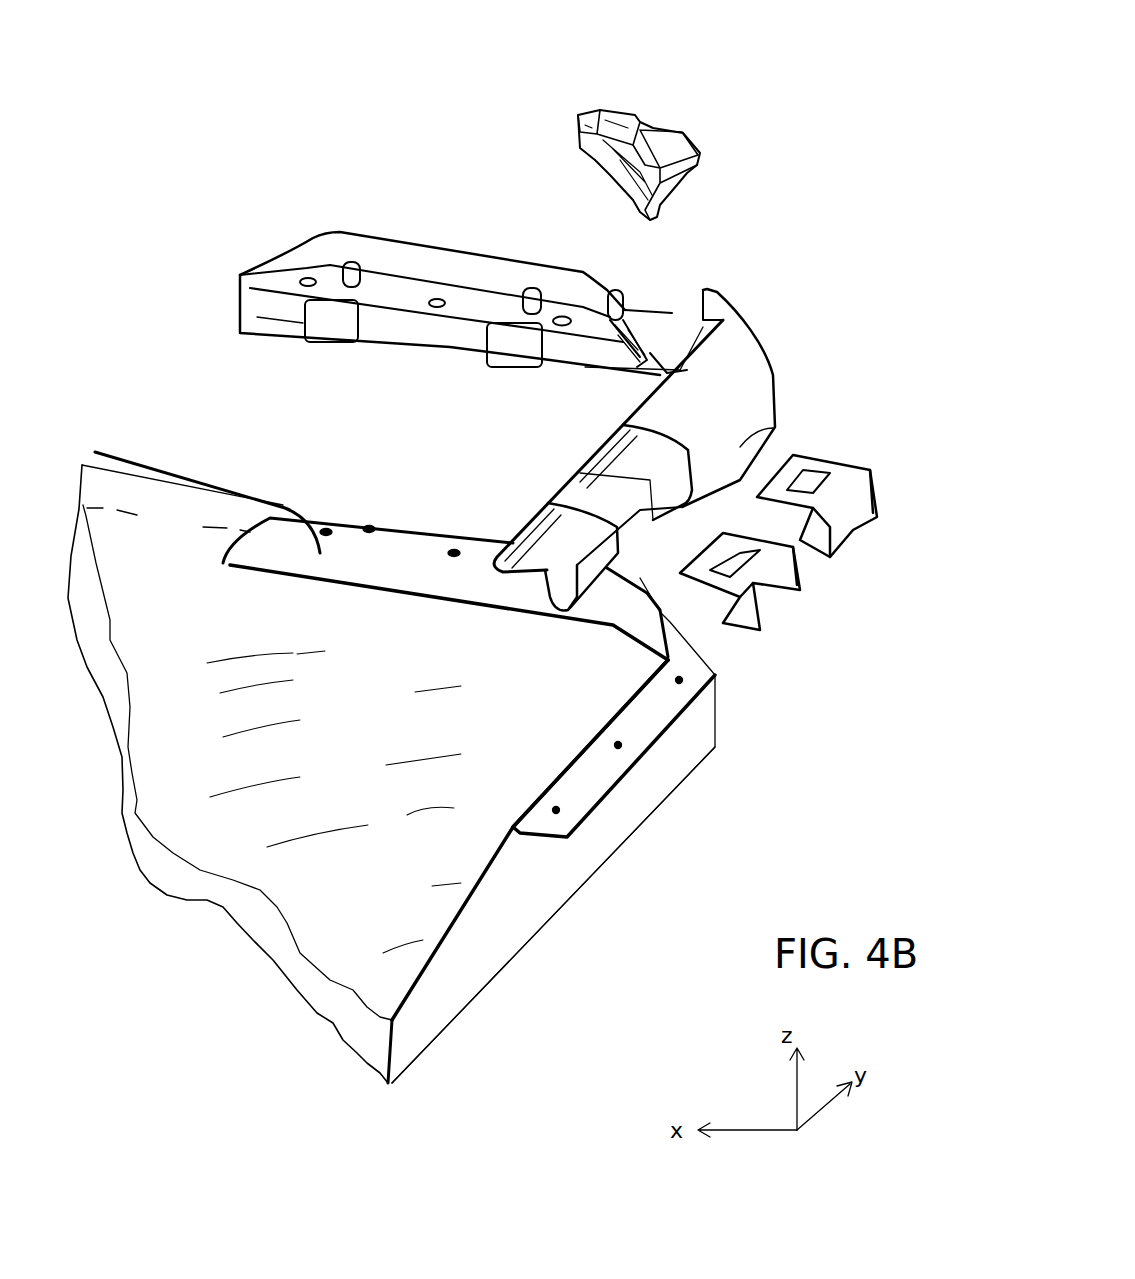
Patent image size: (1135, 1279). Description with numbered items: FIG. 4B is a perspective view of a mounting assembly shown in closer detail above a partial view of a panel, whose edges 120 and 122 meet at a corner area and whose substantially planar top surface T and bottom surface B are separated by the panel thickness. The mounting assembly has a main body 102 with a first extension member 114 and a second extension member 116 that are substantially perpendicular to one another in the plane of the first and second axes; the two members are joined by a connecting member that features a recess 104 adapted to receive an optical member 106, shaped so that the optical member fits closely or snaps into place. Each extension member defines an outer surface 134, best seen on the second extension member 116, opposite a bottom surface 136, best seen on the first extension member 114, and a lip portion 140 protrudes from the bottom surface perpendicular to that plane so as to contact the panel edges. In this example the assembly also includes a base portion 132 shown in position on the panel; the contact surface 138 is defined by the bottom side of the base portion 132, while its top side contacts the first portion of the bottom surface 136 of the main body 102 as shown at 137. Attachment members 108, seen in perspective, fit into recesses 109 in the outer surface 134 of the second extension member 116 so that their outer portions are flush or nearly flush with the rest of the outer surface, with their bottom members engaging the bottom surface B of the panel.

The main body 102 is at (757, 392).
The recess 104 is at (676, 312).
The optical member 106 is at (648, 140).
The attachment members 108 is at (857, 528).
The recesses 109 is at (655, 462).
The first extension member 114 is at (362, 232).
The second extension member 116 is at (779, 420).
The edge 120 is at (178, 513).
The edge 122 is at (577, 875).
The base portion 132 is at (197, 486).
The outer surface 134 is at (593, 473).
The bottom surface 136 is at (450, 326).
The contact location between base top side and bottom surface 137 is at (517, 560).
The contact surface 138 is at (623, 785).
The lip portion 140 is at (572, 597).
The top surface T is at (371, 927).
The bottom surface B is at (345, 1042).